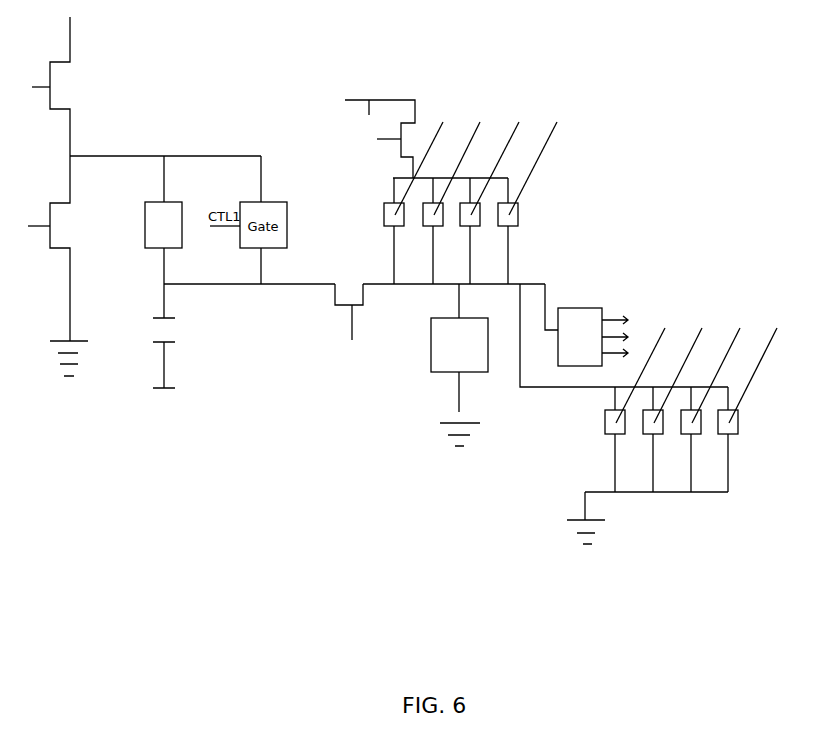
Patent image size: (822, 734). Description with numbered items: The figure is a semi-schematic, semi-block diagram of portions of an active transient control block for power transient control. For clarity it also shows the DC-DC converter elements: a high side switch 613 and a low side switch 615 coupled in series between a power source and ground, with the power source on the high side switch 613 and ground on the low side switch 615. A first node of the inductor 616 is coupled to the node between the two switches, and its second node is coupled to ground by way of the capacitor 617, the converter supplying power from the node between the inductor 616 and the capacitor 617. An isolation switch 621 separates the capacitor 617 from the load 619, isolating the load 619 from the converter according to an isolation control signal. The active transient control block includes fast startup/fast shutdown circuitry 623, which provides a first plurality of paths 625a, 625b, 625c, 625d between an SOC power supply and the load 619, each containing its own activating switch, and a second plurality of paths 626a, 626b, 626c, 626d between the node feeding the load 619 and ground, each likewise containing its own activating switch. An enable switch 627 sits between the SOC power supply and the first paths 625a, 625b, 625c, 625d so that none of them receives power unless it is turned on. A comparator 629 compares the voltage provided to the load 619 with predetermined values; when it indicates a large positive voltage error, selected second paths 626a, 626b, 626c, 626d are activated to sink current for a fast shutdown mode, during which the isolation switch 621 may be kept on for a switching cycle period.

The high side switch 613 is at (60, 62).
The low side switch 615 is at (50, 249).
The inductor 616 is at (147, 222).
The capacitor 617 is at (158, 342).
The load 619 is at (432, 372).
The isolation switch 621 is at (333, 305).
The fast startup/fast shutdown circuitry 623 is at (669, 140).
The first path 625a is at (392, 242).
The first path 625b is at (430, 242).
The first path 625c is at (467, 242).
The first path 625d is at (507, 242).
The second path 626a is at (613, 450).
The second path 626b is at (652, 450).
The second path 626c is at (689, 450).
The second path 626d is at (727, 450).
The enable switch 627 is at (398, 150).
The comparator 629 is at (585, 307).